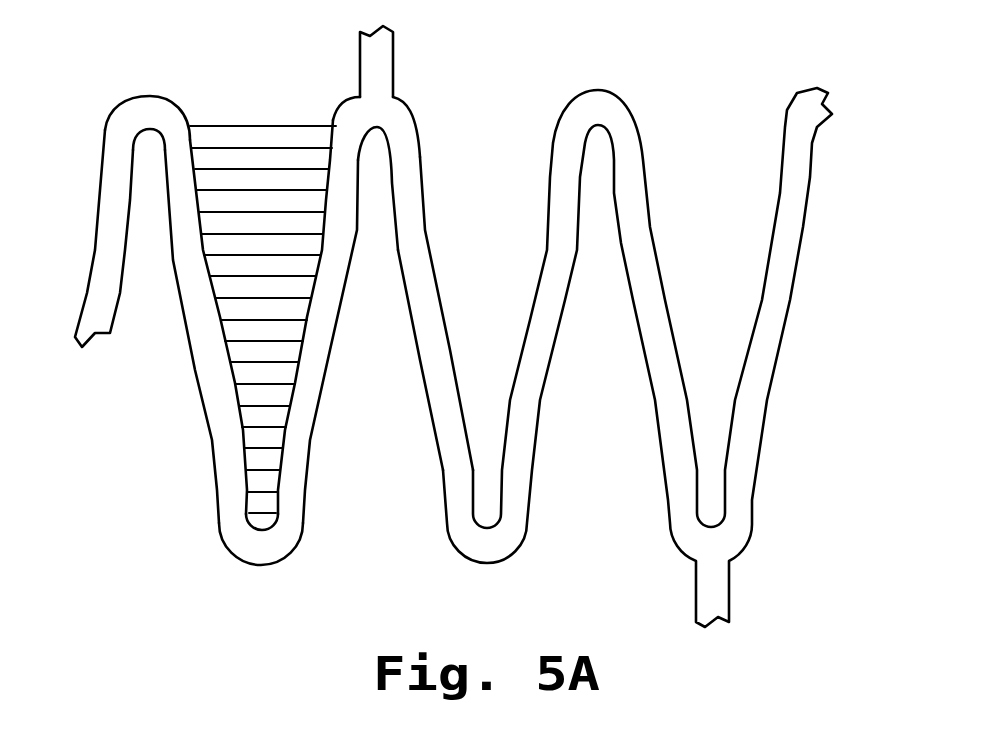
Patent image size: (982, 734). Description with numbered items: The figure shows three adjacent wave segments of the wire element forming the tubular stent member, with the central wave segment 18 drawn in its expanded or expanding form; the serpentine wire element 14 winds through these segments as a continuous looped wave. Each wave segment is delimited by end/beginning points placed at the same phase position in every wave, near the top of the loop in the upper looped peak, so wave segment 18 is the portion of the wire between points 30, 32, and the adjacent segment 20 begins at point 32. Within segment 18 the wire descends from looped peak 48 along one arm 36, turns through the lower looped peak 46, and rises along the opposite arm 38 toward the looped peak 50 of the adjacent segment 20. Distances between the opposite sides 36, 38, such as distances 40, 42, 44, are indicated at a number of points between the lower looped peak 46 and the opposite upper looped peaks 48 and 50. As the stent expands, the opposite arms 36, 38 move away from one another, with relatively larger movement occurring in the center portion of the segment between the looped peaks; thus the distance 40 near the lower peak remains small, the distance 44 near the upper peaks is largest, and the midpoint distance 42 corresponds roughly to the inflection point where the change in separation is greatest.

The serpentine ring segment 14 is at (765, 365).
The wave segment 18 is at (191, 331).
The wave segment 20 is at (417, 280).
The end/beginning point 30 is at (121, 191).
The end/beginning point 32 is at (369, 138).
The arm 36 is at (227, 463).
The arm 38 is at (300, 427).
The distance 40 is at (265, 518).
The distance 42 is at (235, 292).
The distance 44 is at (212, 126).
The looped peak 46 is at (306, 583).
The looped peak 48 is at (150, 108).
The looped peak 50 is at (395, 112).